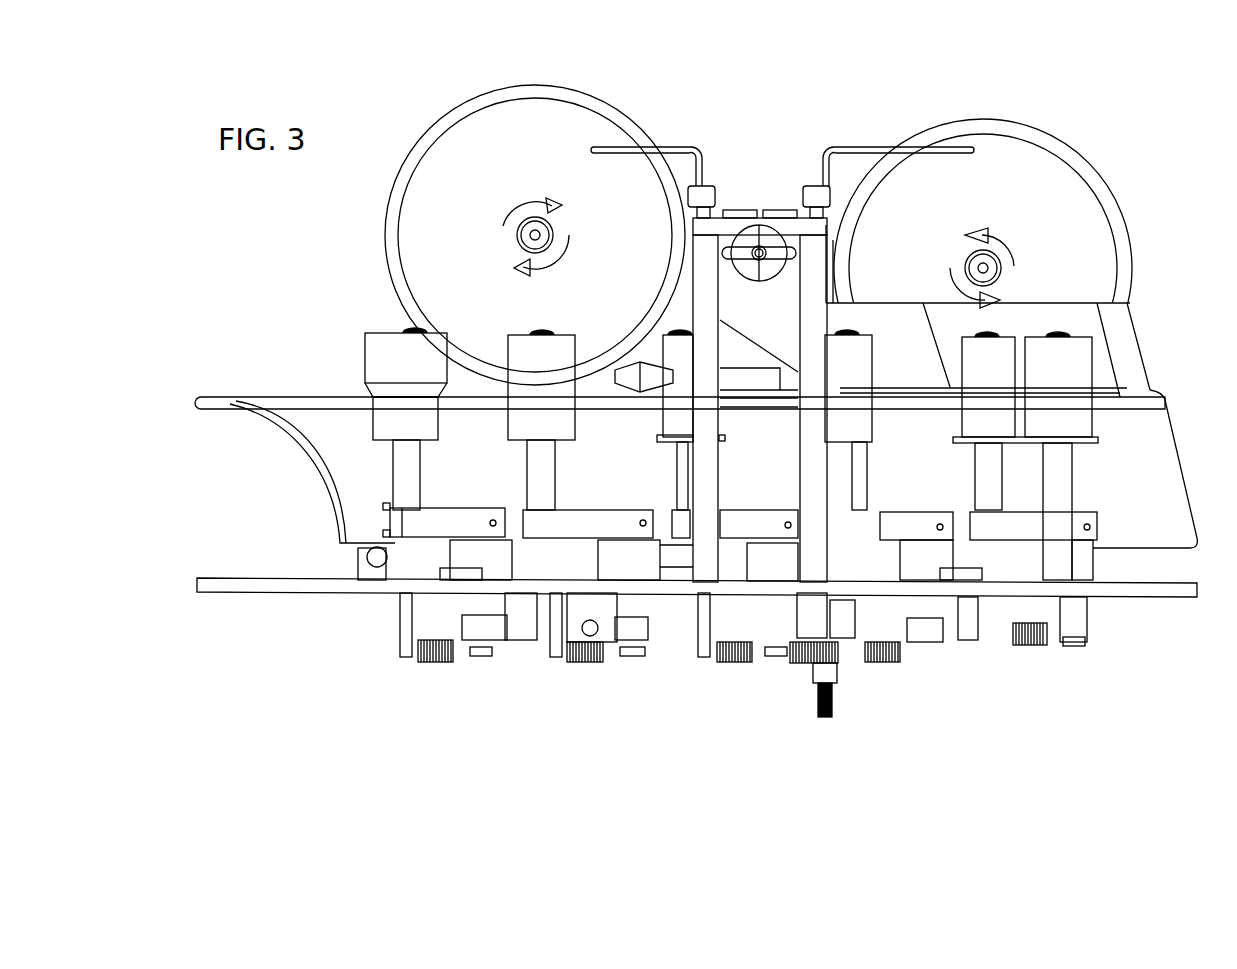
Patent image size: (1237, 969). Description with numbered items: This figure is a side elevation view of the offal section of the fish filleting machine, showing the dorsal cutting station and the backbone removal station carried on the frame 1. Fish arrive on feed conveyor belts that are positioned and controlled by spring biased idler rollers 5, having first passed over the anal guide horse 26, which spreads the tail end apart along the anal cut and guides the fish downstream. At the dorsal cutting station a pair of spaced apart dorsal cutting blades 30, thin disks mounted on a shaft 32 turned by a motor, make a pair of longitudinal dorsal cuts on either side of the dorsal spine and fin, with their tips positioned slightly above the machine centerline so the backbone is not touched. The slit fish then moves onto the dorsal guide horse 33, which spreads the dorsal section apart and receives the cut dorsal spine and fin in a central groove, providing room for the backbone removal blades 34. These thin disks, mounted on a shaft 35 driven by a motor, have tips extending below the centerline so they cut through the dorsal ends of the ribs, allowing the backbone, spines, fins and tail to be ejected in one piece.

The frame 1 is at (265, 627).
The spring biased idler rollers 5 is at (503, 370).
The anal guide horse 26 is at (275, 372).
The dorsal cutting blades 30 is at (541, 96).
The shaft 32 is at (503, 218).
The dorsal guide horse 33 is at (742, 320).
The backbone removal blades 34 is at (986, 98).
The shaft 35 is at (1018, 250).